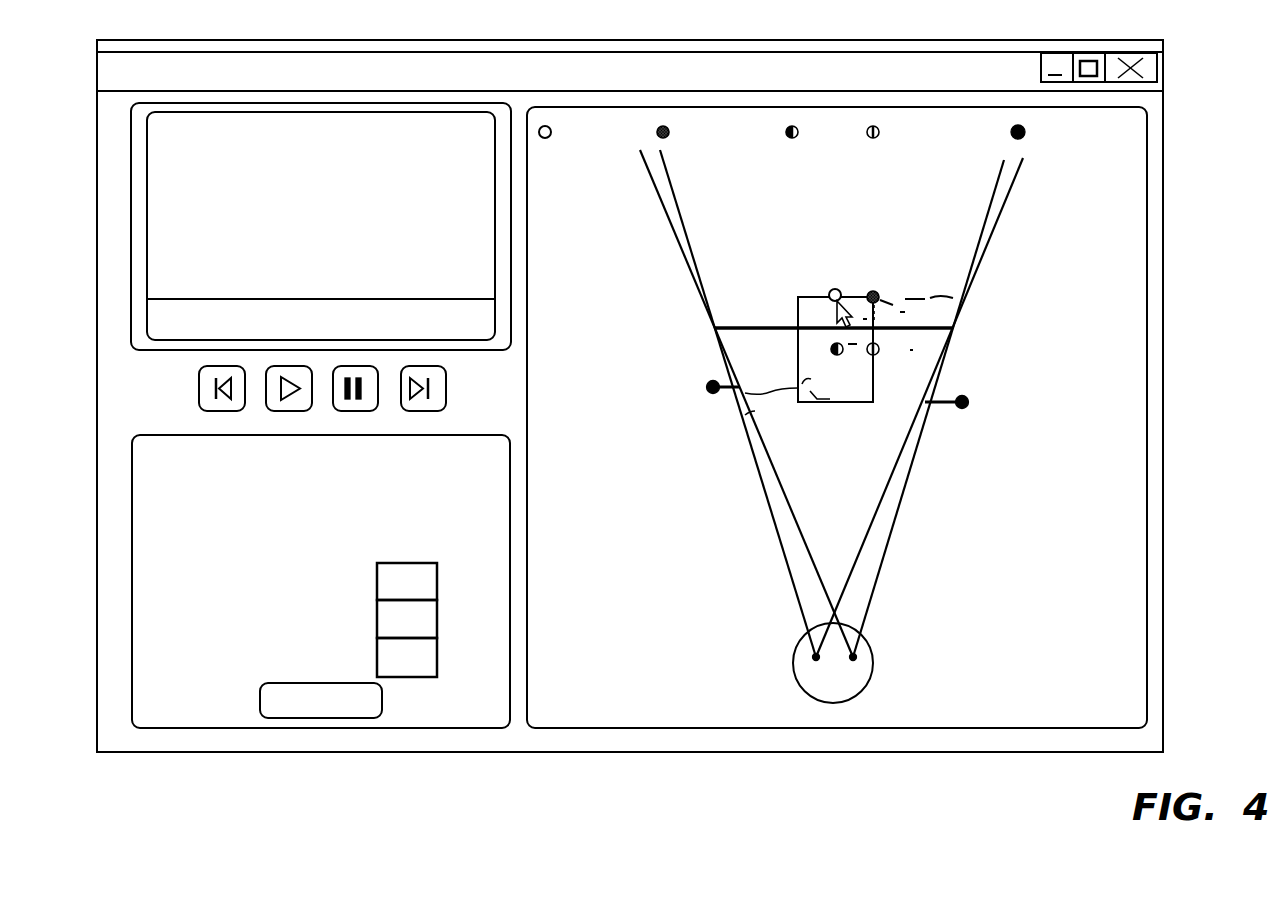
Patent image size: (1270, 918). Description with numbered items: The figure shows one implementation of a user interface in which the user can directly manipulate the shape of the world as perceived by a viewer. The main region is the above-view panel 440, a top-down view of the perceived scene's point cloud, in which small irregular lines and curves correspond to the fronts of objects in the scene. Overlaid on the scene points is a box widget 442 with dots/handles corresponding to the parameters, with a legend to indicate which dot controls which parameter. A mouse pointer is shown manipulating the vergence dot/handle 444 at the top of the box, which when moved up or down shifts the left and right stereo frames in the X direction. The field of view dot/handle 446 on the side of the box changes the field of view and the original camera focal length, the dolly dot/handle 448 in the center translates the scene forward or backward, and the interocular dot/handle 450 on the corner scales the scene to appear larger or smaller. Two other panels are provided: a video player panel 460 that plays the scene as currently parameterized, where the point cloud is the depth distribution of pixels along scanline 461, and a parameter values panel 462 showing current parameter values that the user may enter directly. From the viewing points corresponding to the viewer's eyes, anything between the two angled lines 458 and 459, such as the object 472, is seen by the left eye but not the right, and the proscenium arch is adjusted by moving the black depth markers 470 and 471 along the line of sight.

The above-view panel 440 is at (1115, 490).
The box widget 442 is at (806, 318).
The vergence dot/handle 444 is at (831, 290).
The field of view dot/handle 446 is at (877, 355).
The dolly dot/handle 448 is at (830, 350).
The interocular dot/handle 450 is at (878, 290).
The angled line 458 is at (757, 501).
The angled line 459 is at (796, 483).
The video player panel 460 is at (249, 173).
The scanline 461 is at (352, 300).
The parameter values panel 462 is at (200, 718).
The depth marker 470 is at (706, 387).
The depth marker 471 is at (969, 402).
The object 472 is at (728, 432).